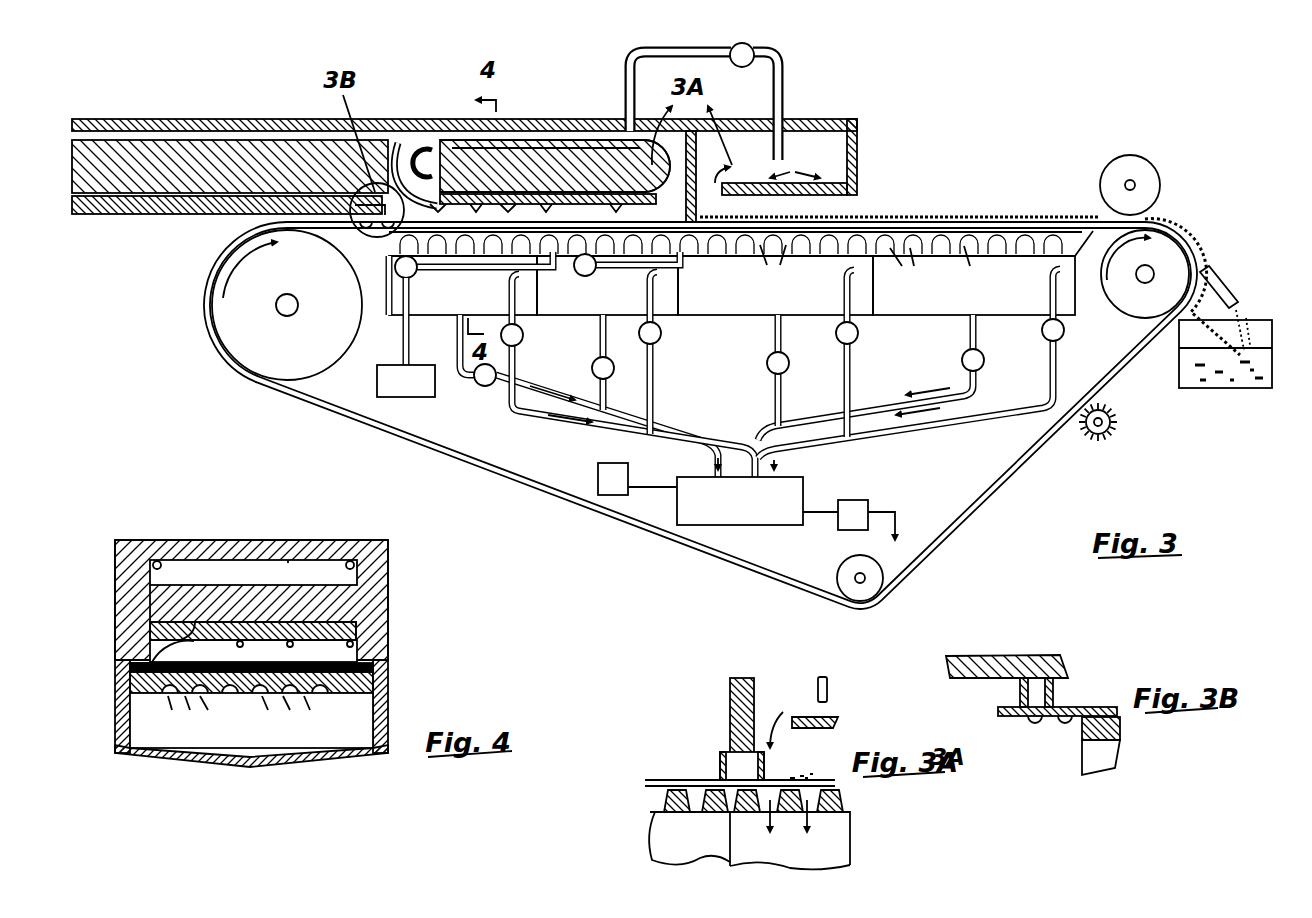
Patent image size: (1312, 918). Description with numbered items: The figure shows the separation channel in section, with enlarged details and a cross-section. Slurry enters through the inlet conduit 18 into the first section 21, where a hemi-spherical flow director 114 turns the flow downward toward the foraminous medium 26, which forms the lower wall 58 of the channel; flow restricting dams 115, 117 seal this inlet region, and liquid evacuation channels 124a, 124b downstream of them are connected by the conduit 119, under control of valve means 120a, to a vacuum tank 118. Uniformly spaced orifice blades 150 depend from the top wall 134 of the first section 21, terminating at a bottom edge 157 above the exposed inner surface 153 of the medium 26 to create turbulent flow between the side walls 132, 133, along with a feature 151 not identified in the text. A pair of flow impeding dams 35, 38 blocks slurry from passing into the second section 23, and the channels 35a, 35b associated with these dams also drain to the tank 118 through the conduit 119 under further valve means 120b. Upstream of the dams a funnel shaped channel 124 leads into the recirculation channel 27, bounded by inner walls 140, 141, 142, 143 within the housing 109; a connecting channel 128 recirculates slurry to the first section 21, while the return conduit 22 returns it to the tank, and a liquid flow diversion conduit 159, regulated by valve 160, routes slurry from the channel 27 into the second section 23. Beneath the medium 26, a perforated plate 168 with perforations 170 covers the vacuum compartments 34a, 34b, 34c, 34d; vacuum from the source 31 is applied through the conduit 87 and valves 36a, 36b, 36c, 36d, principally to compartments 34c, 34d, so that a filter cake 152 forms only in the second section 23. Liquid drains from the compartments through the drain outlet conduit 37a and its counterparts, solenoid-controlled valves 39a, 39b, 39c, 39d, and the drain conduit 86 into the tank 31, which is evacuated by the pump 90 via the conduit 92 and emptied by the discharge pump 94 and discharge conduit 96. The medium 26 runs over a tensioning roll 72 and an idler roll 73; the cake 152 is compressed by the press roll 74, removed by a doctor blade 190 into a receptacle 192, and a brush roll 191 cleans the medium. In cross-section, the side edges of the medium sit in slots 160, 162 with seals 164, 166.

In FIG. 3, the inlet conduit 18 is at (163, 196).
In FIG. 3, the first section 21 is at (588, 210).
In FIG. 4, the first section 21 is at (318, 628).
In FIG. 3, the return conduit 22 is at (198, 134).
In FIG. 3, the second section 23 is at (794, 216).
In FIG. 3, the foraminous medium 26 is at (968, 518).
In FIG. 3A, the foraminous medium 26 is at (812, 779).
In FIG. 3B, the foraminous medium 26 is at (1094, 708).
In FIG. 3, the recirculation channel 27 is at (563, 137).
In FIG. 4, the recirculation channel 27 is at (276, 582).
In FIG. 3, the vacuum tank 31 is at (800, 492).
In FIG. 3, the vacuum compartment 34a is at (476, 309).
In FIG. 4, the vacuum compartment 34a is at (311, 730).
In FIG. 3B, the vacuum compartment 34a is at (1122, 751).
In FIG. 3, the vacuum compartment 34b is at (570, 309).
In FIG. 3A, the vacuum compartment 34b is at (665, 826).
In FIG. 3, the vacuum compartment 34c is at (720, 309).
In FIG. 3A, the vacuum compartment 34c is at (840, 826).
In FIG. 3, the vacuum compartment 34d is at (935, 309).
In FIG. 3A, the flow impeding dam 35 is at (765, 764).
In FIG. 3A, the liquid collection channel 35a is at (702, 822).
In FIG. 3A, the liquid collection channel 35b is at (752, 820).
In FIG. 3, the valve assembly 36a is at (524, 335).
In FIG. 3, the valve assembly 36b is at (662, 335).
In FIG. 3, the valve assembly 36c is at (858, 333).
In FIG. 3, the valve assembly 36d is at (1064, 331).
In FIG. 3, the drain outlet conduit 37a is at (457, 346).
In FIG. 3, the flow impeding dam 38 is at (685, 213).
In FIG. 3A, the flow impeding dam 38 is at (719, 766).
In FIG. 3, the solenoid-controlled valve 39a is at (480, 386).
In FIG. 3, the solenoid-controlled valve 39b is at (592, 366).
In FIG. 3, the solenoid-controlled valve 39c is at (767, 362).
In FIG. 3, the solenoid-controlled valve 39d is at (962, 360).
In FIG. 4, the lower wall 58 is at (150, 622).
In FIG. 3, the tensioning roll 72 is at (218, 334).
In FIG. 3, the idler roll 73 is at (880, 576).
In FIG. 3, the press roll 74 is at (1100, 187).
In FIG. 3, the drain conduit 86 is at (778, 458).
In FIG. 3, the vacuum conduit 87 is at (668, 446).
In FIG. 3, the pump 90 is at (597, 470).
In FIG. 3, the conduit 92 is at (644, 486).
In FIG. 3, the discharge pump 94 is at (858, 500).
In FIG. 3, the discharge conduit 96 is at (818, 514).
In FIG. 3, the housing 109 is at (513, 118).
In FIG. 4, the housing 109 is at (392, 599).
In FIG. 3, the flow director 114 is at (437, 198).
In FIG. 3B, the flow restricting dam 115 is at (1052, 700).
In FIG. 3B, the flow restricting dam 117 is at (1018, 694).
In FIG. 3, the vacuum tank 118 is at (425, 387).
In FIG. 3, the conduit 119 is at (402, 342).
In FIG. 3, the valve means 120a is at (416, 271).
In FIG. 3, the valve means 120b is at (596, 271).
In FIG. 3, the funnel shaped channel 124 is at (660, 176).
In FIG. 3B, the liquid evacuation channel 124a is at (1030, 730).
In FIG. 3, the liquid evacuation channel 124b is at (352, 235).
In FIG. 3B, the liquid evacuation channel 124b is at (1058, 732).
In FIG. 3, the connecting channel 128 is at (422, 158).
In FIG. 4, the side wall 132 is at (150, 636).
In FIG. 4, the side wall 133 is at (358, 650).
In FIG. 4, the top wall 134 is at (195, 630).
In FIG. 4, the inner wall 140 is at (118, 563).
In FIG. 4, the inner wall 141 is at (253, 571).
In FIG. 4, the inner wall 142 is at (388, 563).
In FIG. 4, the inner wall 143 is at (288, 560).
In FIG. 3, the orifice blades 150 is at (512, 210).
In FIG. 4, the orifice blades 150 is at (356, 629).
In FIG. 4, the perforation 151 is at (245, 640).
In FIG. 3, the filter cake 152 is at (927, 220).
In FIG. 4, the exposed inner surface 153 is at (152, 658).
In FIG. 4, the bottom edge 157 is at (292, 640).
In FIG. 3, the liquid flow diversion conduit 159 is at (680, 48).
In FIG. 3A, the liquid flow diversion conduit 159 is at (830, 683).
In FIG. 3, the valve 160 is at (752, 48).
In FIG. 4, the valve 160 is at (380, 678).
In FIG. 4, the slot 162 is at (123, 673).
In FIG. 4, the seal 164 is at (376, 667).
In FIG. 4, the seal 166 is at (128, 665).
In FIG. 3, the perforated plate 168 is at (910, 266).
In FIG. 4, the perforated plate 168 is at (281, 713).
In FIG. 3, the perforations 170 is at (877, 265).
In FIG. 4, the perforations 170 is at (183, 713).
In FIG. 3, the doctor blade 190 is at (1220, 286).
In FIG. 3, the brush roll 191 is at (1102, 436).
In FIG. 3, the receptacle 192 is at (1205, 378).